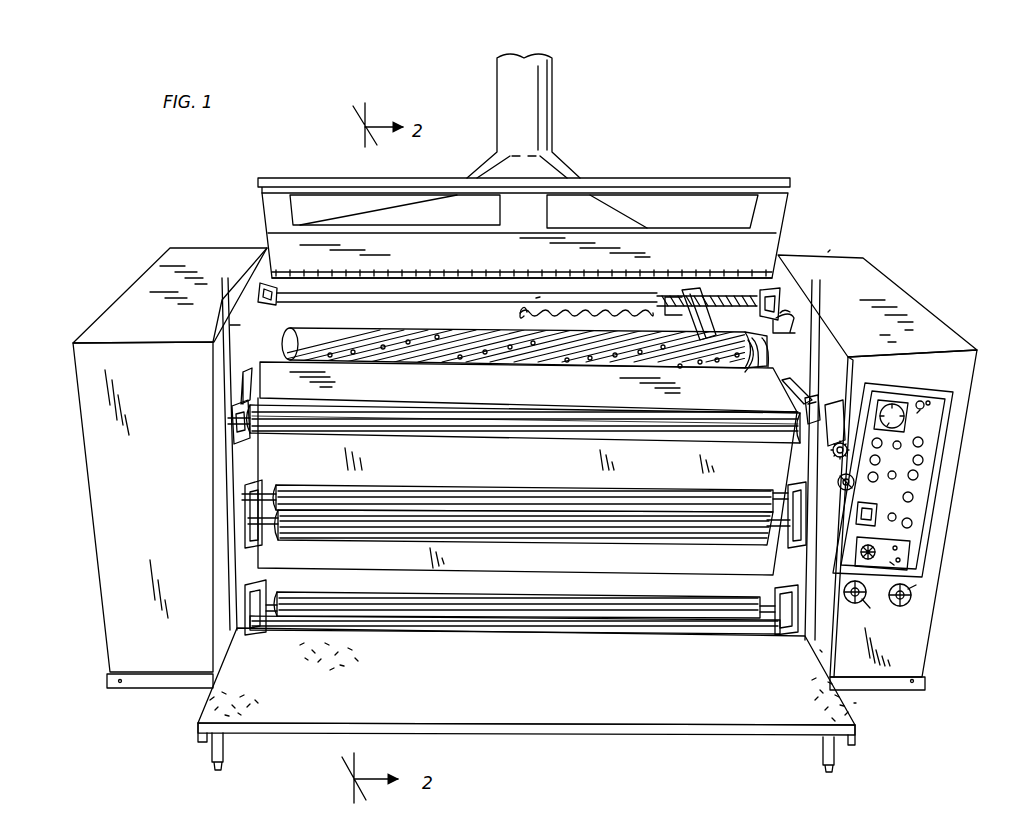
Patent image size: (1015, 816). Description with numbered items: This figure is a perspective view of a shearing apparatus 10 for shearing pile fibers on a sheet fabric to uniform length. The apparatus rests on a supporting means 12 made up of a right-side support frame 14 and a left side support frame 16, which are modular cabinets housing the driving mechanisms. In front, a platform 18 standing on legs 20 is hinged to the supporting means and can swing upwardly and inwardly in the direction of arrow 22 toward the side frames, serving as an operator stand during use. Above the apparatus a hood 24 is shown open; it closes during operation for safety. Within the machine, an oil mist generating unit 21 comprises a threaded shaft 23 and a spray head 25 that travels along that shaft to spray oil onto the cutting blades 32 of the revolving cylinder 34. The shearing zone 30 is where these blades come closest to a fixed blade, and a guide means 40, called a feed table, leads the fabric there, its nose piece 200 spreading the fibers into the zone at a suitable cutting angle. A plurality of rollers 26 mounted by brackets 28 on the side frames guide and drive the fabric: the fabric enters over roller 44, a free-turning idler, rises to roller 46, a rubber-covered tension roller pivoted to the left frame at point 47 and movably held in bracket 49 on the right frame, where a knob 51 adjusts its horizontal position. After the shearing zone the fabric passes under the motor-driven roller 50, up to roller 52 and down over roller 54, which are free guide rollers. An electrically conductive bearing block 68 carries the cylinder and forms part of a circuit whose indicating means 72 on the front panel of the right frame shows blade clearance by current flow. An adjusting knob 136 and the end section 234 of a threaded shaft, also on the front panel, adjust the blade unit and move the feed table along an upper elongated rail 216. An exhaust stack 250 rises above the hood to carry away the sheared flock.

The shearing apparatus 10 is at (832, 249).
The supporting means 12 is at (860, 704).
The right-side support frame 14 is at (940, 531).
The left side support frame 16 is at (112, 460).
The platform 18 is at (644, 720).
The legs 20 is at (224, 745).
The oil mist generating unit 21 is at (668, 288).
The arrow 22 is at (793, 658).
The threaded shaft 23 is at (540, 300).
The hood 24 is at (738, 190).
The spray head 25 is at (708, 322).
The rollers 26 is at (522, 488).
The brackets 28 is at (248, 540).
The shearing zone 30 is at (525, 358).
The cutting blades 32 is at (333, 327).
The revolving cylinder 34 is at (488, 337).
The guide means 40 is at (662, 396).
The roller 44 is at (476, 628).
The roller 46 is at (565, 442).
The point 47 is at (232, 434).
The bracket 49 is at (850, 432).
The roller 50 is at (545, 540).
The knob 51 is at (836, 455).
The roller 52 is at (654, 478).
The roller 54 is at (603, 590).
The bearing block 68 is at (267, 338).
The indicating means 72 is at (922, 402).
The adjusting knob 136 is at (840, 483).
The nose piece 200 is at (748, 360).
The upper elongated rail 216 is at (240, 385).
The end section 234 is at (853, 425).
The exhaust stack 250 is at (528, 126).